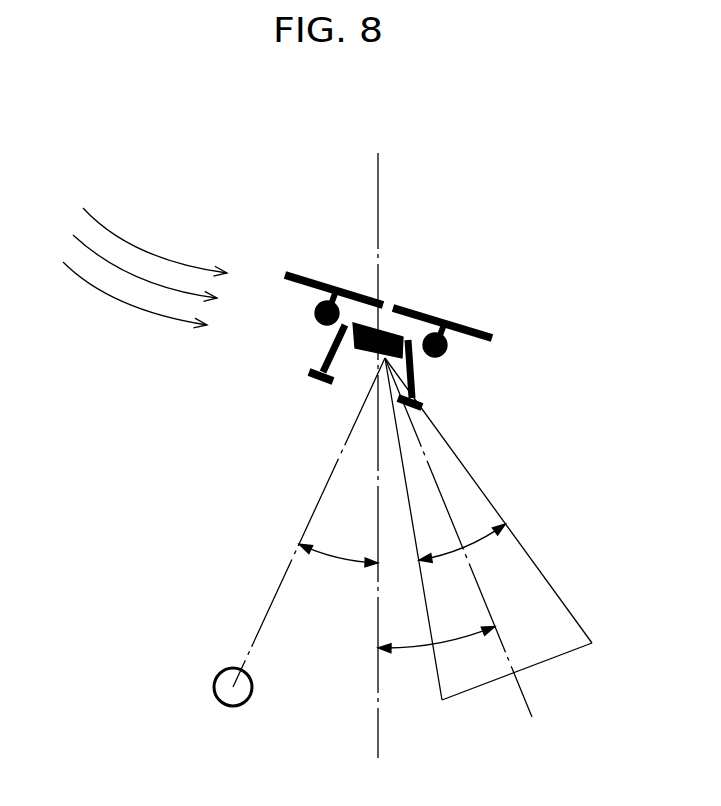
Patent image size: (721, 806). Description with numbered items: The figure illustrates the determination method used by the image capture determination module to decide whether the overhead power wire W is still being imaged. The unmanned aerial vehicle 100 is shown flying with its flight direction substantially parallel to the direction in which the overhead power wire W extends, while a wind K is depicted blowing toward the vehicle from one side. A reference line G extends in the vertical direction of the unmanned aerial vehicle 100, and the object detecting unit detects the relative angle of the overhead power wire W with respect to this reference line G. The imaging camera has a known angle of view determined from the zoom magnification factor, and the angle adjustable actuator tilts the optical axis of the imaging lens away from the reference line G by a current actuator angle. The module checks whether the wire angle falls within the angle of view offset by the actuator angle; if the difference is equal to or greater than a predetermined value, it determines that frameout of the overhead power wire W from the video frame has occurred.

The unmanned aerial vehicle 100 is at (472, 328).
The reference line G is at (377, 442).
The wind K is at (148, 253).
The overhead power wire W is at (234, 668).